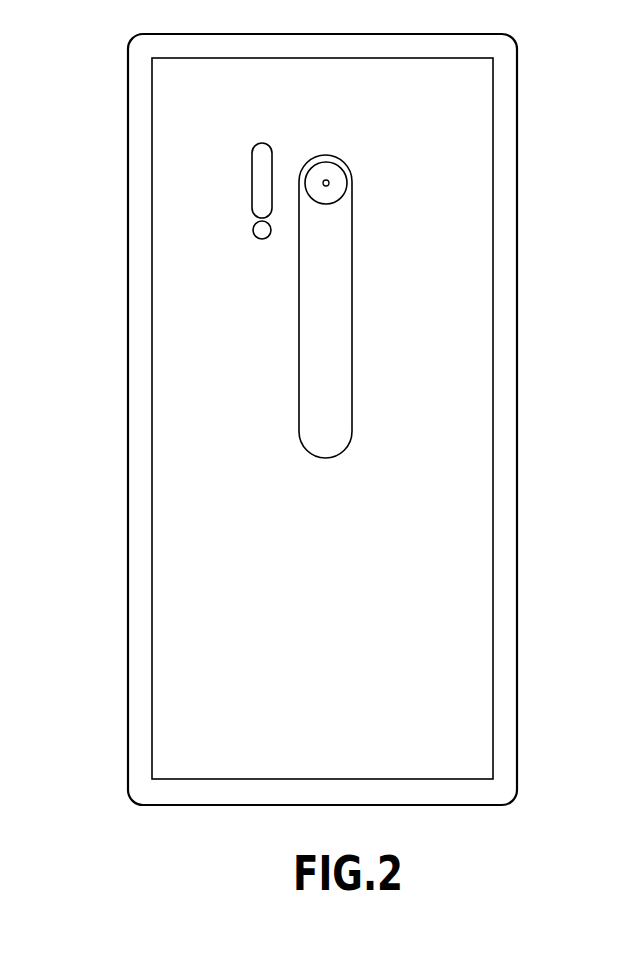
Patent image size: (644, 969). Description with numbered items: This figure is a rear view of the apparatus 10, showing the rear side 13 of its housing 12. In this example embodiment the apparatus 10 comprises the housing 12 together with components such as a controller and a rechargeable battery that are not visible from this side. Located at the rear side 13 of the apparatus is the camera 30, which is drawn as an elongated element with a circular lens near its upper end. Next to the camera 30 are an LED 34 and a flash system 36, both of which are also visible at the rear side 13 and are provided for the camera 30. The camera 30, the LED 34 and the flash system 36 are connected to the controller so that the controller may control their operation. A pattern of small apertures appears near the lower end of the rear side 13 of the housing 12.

The apparatus 10 is at (555, 107).
The housing 12 is at (500, 303).
The rear side 13 is at (475, 400).
The camera 30 is at (335, 182).
The LED 34 is at (253, 227).
The flash system 36 is at (260, 193).